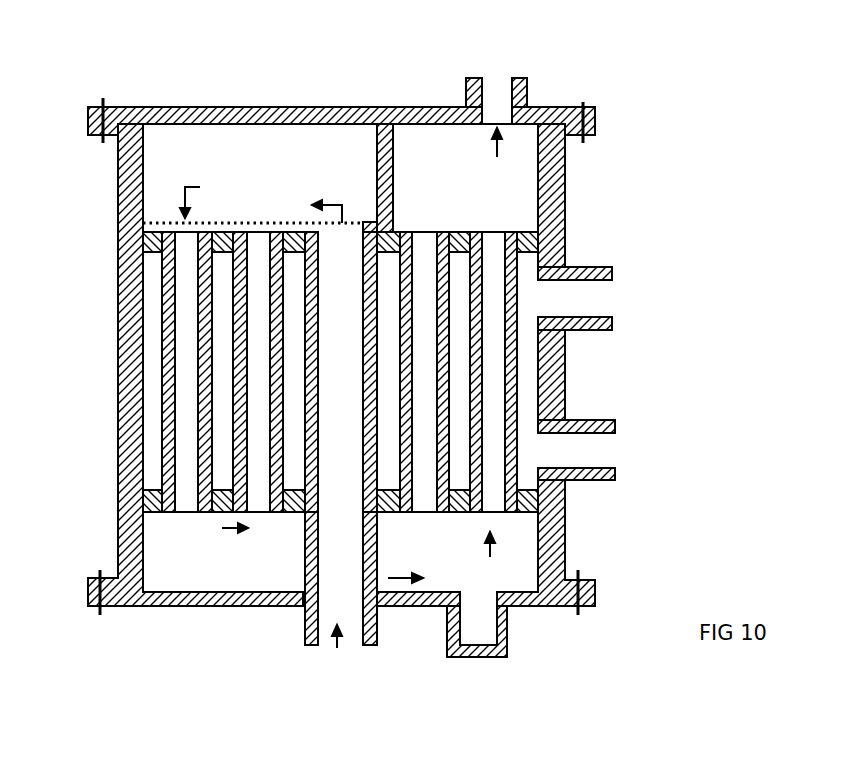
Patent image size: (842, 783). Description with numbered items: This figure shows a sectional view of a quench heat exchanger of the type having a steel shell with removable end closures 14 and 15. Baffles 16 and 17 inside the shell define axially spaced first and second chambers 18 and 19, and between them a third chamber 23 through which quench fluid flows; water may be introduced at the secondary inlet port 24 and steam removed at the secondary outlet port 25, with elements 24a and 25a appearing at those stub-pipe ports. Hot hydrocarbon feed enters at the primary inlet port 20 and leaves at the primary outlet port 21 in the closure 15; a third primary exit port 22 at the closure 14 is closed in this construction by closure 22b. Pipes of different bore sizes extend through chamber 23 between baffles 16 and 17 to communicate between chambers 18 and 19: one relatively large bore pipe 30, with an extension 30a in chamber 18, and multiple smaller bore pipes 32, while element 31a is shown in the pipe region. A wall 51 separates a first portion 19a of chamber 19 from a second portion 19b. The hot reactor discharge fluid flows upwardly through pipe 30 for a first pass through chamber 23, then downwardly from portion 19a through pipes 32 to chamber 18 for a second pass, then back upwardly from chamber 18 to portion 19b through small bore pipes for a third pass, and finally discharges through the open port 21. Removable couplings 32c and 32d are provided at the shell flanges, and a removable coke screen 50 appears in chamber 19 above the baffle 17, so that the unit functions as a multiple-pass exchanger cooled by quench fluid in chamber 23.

The removable end closure 14 is at (187, 606).
The removable end closure 15 is at (364, 107).
The baffle 16 is at (150, 500).
The baffle 17 is at (145, 239).
The first chamber 18 is at (230, 546).
The second chamber 19 is at (230, 184).
The first portion of chamber 19 19a is at (321, 199).
The second portion of chamber 19 19b is at (450, 180).
The primary inlet port 20 is at (320, 636).
The primary outlet port 21 is at (499, 78).
The third primary exit port 22 is at (477, 633).
The closure of port 22 22b is at (470, 657).
The third chamber 23 is at (527, 393).
The secondary inlet port 24 is at (615, 452).
The lower side port wall 24a is at (598, 480).
The secondary outlet port 25 is at (612, 299).
The upper side port wall 25a is at (592, 265).
The pipe of relatively large diameter 30 is at (342, 357).
The extension of pipe 30 30a is at (377, 552).
The right heat exchange plates 31a is at (495, 438).
The pipes of relatively reduced diameter 32 is at (260, 367).
The removable coupling 32c is at (583, 143).
The removable coupling 32d is at (580, 572).
The coke screen 50 is at (237, 223).
The wall 51 is at (377, 147).